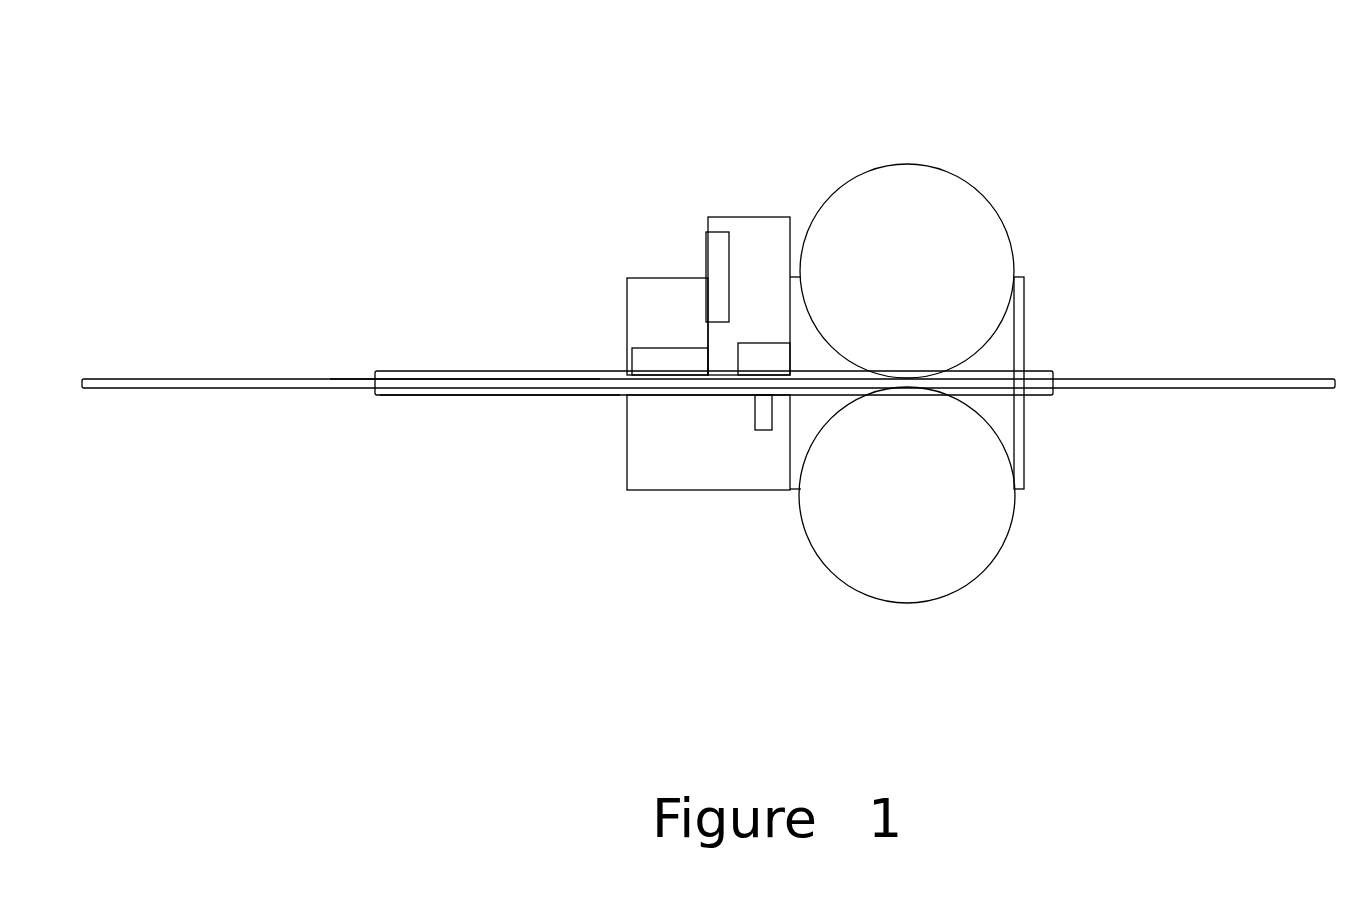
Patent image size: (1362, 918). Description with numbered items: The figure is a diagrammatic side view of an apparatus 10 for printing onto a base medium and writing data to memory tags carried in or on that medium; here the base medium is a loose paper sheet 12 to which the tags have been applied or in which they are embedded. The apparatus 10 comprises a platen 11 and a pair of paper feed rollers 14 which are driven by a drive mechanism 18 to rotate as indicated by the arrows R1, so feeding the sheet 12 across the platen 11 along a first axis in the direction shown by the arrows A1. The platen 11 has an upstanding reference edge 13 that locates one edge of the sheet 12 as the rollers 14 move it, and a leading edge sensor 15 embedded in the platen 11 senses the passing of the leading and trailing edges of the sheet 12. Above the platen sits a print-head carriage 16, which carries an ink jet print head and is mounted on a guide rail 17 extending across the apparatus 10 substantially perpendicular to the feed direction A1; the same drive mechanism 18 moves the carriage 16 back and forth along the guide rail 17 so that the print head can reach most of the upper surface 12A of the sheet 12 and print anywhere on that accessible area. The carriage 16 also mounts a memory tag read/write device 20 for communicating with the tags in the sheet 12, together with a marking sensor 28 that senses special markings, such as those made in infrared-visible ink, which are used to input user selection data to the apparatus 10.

The apparatus 10 is at (338, 127).
The platen 11 is at (422, 396).
The sheet 12 is at (286, 400).
The upper surface 12A is at (327, 377).
The reference edge 13 is at (490, 370).
The paper feed rollers 14 is at (1013, 256).
The leading edge sensor 15 is at (763, 424).
The print-head carriage 16 is at (763, 215).
The guide rail 17 is at (712, 248).
The drive mechanism 18 is at (633, 447).
The memory tag read/write device 20 is at (647, 355).
The marking sensor 28 is at (762, 363).
The first axis direction arrows A1 is at (99, 347).
The roller rotation arrows R1 is at (917, 134).